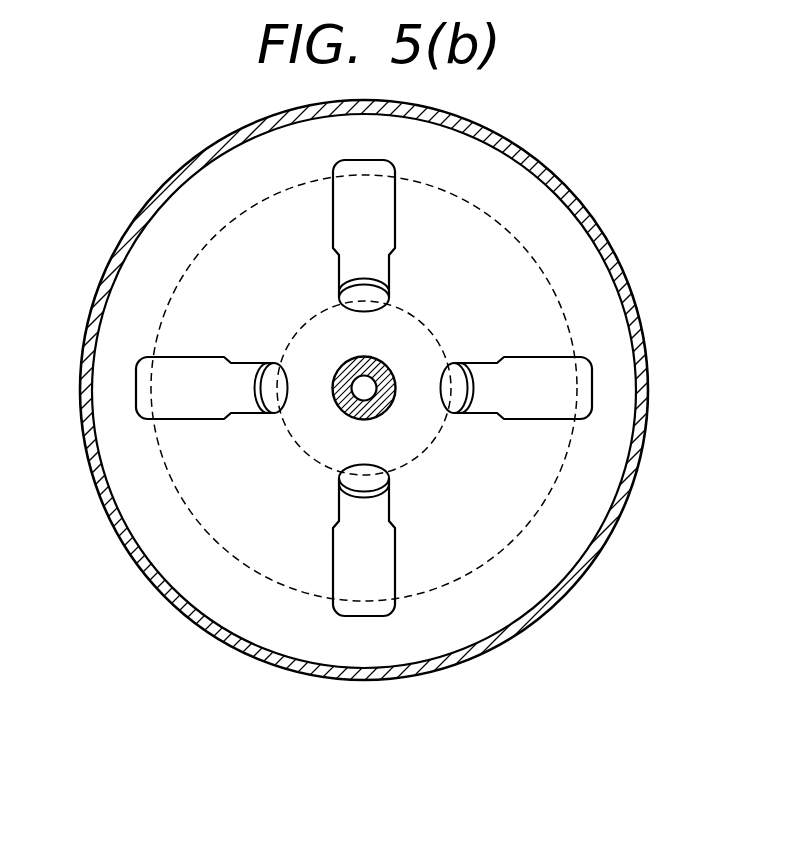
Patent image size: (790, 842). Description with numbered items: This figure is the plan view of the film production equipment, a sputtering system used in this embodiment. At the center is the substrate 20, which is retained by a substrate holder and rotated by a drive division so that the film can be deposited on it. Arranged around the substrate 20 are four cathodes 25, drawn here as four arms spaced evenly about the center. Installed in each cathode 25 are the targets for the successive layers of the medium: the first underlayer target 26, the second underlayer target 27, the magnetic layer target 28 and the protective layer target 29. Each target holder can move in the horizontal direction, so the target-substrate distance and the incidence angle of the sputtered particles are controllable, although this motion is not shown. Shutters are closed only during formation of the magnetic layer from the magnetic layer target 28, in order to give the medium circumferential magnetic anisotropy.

The substrate 20 is at (385, 397).
The cathode 25 is at (337, 217).
The first underlayer target 26 is at (443, 370).
The second underlayer target 27 is at (347, 463).
The magnetic layer target 28 is at (289, 353).
The protective layer target 29 is at (377, 293).